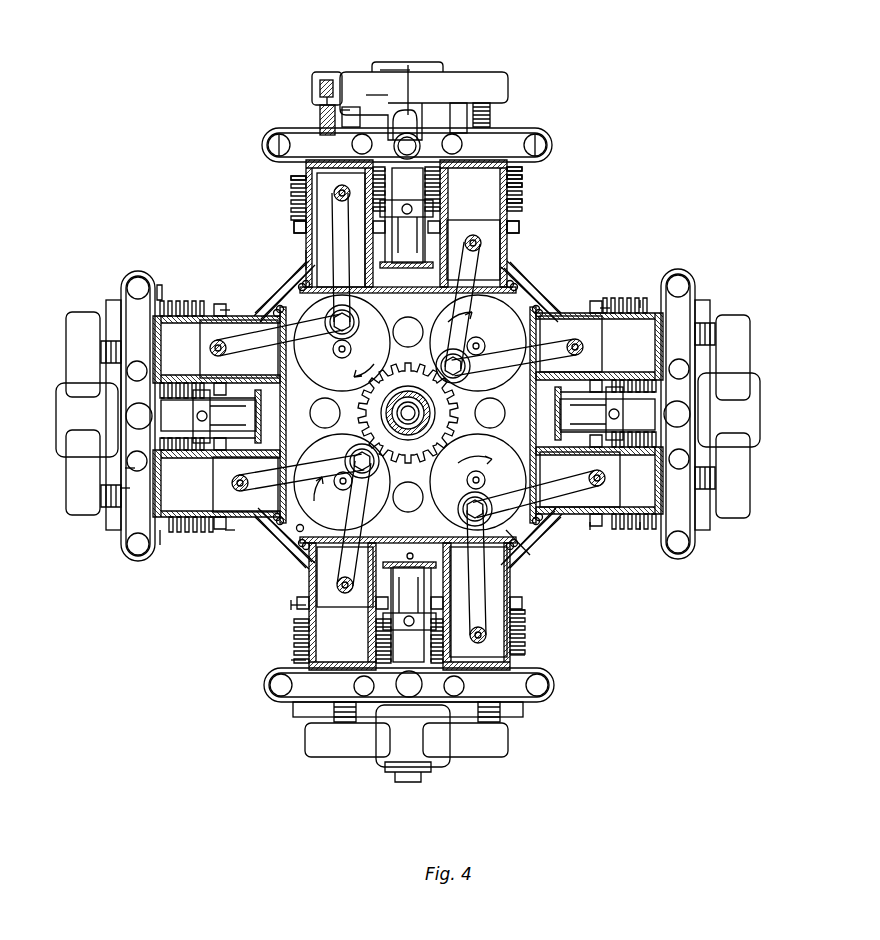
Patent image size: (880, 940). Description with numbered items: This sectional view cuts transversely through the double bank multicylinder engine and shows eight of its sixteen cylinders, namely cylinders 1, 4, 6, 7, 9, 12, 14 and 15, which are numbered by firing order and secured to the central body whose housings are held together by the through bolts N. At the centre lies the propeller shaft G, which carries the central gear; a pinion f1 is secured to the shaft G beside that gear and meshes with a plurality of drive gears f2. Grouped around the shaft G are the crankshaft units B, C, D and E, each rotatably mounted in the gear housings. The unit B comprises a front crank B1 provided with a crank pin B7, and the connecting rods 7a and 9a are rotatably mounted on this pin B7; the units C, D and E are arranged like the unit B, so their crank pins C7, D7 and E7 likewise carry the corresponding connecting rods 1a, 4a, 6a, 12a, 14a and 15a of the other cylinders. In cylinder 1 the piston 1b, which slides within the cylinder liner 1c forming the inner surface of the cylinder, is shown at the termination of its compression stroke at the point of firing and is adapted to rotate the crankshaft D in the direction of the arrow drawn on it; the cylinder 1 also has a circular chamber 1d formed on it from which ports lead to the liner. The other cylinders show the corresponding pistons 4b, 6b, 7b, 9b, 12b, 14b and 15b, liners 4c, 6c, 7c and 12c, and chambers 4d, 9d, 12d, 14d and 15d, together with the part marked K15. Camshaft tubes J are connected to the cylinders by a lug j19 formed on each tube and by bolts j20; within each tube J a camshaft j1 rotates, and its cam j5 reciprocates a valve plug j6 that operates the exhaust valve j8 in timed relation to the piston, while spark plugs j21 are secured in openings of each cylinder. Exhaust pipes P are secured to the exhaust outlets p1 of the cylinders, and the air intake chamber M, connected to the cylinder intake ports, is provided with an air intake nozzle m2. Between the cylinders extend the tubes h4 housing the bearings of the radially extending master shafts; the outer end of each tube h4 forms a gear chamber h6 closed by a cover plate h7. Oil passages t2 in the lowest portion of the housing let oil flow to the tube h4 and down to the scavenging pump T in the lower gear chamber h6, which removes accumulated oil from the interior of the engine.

The cylinder 1 is at (300, 195).
The cylinder 4 is at (512, 200).
The cylinder 6 is at (612, 300).
The cylinder 7 is at (616, 540).
The cylinder 9 is at (525, 630).
The cylinder 12 is at (292, 650).
The cylinder 14 is at (195, 530).
The cylinder 15 is at (218, 300).
The piston of cylinder 1 1a is at (340, 240).
The piston of cylinder 4 4a is at (482, 262).
The piston of cylinder 6 6a is at (585, 320).
The connecting rod 7a is at (575, 510).
The connecting rod 9a is at (508, 585).
The piston of cylinder 12 12a is at (335, 565).
The piston of cylinder 14 14a is at (250, 512).
The piston of cylinder 15 15a is at (245, 340).
The piston 1b is at (291, 177).
The cylinder liner 1c is at (304, 258).
The circular chamber 1d is at (294, 226).
The cooling fins 4b is at (522, 212).
The cylinder wall 4c is at (522, 195).
The cylinder boss 4d is at (519, 230).
The cylinder wall 6b is at (605, 312).
The cooling fins 6c is at (642, 305).
The cylinder wall 7b is at (592, 540).
The cooling fins 7c is at (640, 540).
The cooling fins 9b is at (522, 655).
The cylinder boss 9d is at (520, 610).
The cylinder wall 12b is at (300, 605).
The cooling fins 12c is at (292, 660).
The cylinder boss 12d is at (300, 600).
The cooling fins 14b is at (178, 530).
The cylinder boss 14d is at (230, 532).
The cooling fins 15b is at (185, 300).
The cylinder boss 15d is at (225, 312).
The exhaust pipe P is at (262, 145).
The exhaust outlets p1 is at (540, 140).
The camshaft tube J is at (318, 82).
The camshaft j1 is at (312, 88).
The cam j5 is at (330, 80).
The valve plug j6 is at (322, 108).
The exhaust valve j8 is at (320, 122).
The lug j19 is at (120, 490).
The bolts j20 is at (125, 470).
The spark plugs j21 is at (348, 107).
The air intake chamber M is at (382, 115).
The air intake nozzle m2 is at (406, 118).
The tube h4 is at (412, 138).
The gear chamber h6 is at (420, 80).
The cover plate h7 is at (410, 100).
The cooling fins K15 is at (524, 185).
The crankshaft unit D is at (330, 310).
The crankshaft unit E is at (520, 305).
The crankshaft unit C is at (300, 535).
The crankshaft unit B is at (484, 483).
The crank pin D7 is at (356, 316).
The crank pin E7 is at (466, 374).
The crank pin C7 is at (366, 474).
The crank pin B7 is at (468, 516).
The front crank B1 is at (522, 545).
The propeller shaft G is at (372, 428).
The pinion f1 is at (381, 395).
The drive gears f2 is at (381, 413).
The through bolts N is at (391, 419).
The oil passages t2 is at (407, 556).
The scavenging pump T is at (411, 783).